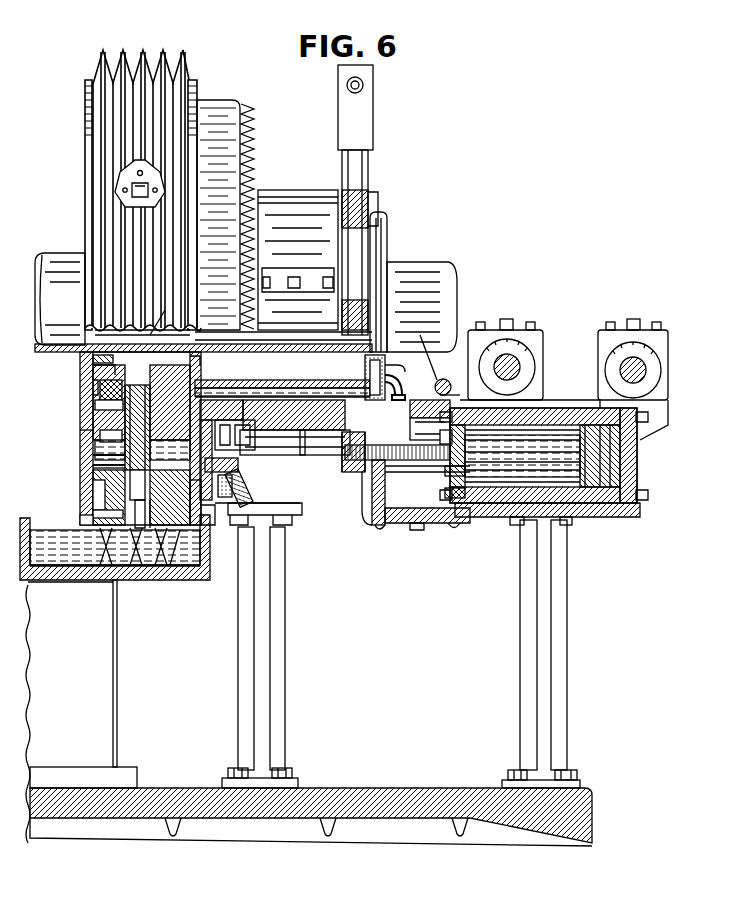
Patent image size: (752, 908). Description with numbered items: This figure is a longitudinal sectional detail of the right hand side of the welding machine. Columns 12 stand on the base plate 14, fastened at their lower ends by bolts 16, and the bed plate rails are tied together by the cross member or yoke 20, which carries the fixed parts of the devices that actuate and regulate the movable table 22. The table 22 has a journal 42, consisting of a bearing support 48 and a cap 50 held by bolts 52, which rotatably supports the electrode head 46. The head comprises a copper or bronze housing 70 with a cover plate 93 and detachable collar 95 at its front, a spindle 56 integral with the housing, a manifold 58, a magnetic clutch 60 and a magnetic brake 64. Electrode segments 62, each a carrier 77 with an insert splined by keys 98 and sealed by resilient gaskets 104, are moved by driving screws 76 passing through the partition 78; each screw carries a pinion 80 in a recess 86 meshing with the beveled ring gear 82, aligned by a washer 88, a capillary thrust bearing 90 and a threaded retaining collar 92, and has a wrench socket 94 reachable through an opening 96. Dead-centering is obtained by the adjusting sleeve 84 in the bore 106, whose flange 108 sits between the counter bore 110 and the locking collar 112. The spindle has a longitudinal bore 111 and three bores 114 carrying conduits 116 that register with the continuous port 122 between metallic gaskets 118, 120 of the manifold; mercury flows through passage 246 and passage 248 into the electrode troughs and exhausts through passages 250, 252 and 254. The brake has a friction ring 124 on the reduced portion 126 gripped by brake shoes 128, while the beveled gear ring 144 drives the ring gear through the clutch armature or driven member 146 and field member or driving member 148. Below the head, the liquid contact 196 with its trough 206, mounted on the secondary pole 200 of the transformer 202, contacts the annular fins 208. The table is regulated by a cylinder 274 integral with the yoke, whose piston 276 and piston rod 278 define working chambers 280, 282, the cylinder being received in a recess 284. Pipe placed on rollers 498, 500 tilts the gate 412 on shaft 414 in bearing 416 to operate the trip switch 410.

The columns 12 is at (286, 654).
The base plate 14 is at (378, 788).
The bolts 16 is at (293, 775).
The cross member or yoke 20 is at (618, 510).
The movable table 22 is at (378, 535).
The journal 42 is at (298, 267).
The electrode head 46 is at (190, 72).
The bearing support 48 is at (278, 455).
The cap 50 is at (290, 190).
The bolts 52 is at (292, 276).
The spindle 56 is at (303, 456).
The manifold 58 is at (389, 240).
The magnetic clutch 60 is at (240, 462).
The electrode segments 62 is at (214, 384).
The magnetic brake 64 is at (373, 136).
The housing 70 is at (86, 500).
The driving screw 76 is at (100, 392).
The carrier 77 is at (96, 408).
The partition 78 is at (102, 472).
The pinion 80 is at (190, 530).
The beveled ring gear 82 is at (190, 520).
The adjusting sleeve 84 is at (205, 395).
The recesses 86 is at (94, 488).
The washer 88 is at (93, 461).
The capillary thrust bearing 90 is at (100, 568).
The threaded retaining collar 92 is at (138, 568).
The cover plate 93 is at (94, 512).
The wrench sockets 94 is at (128, 192).
The detachable collar 95 is at (80, 320).
The opening 96 is at (136, 172).
The keys 98 is at (186, 358).
The resilient gaskets 104 is at (185, 332).
The bore 106 is at (60, 398).
The flange 108 is at (94, 445).
The counter bore 110 is at (78, 430).
The longitudinal bore 111 is at (402, 360).
The locking collar 112 is at (235, 435).
The bores 114 is at (282, 398).
The conduits 116 is at (325, 456).
The metallic gasket 118 is at (364, 368).
The metallic gasket 120 is at (369, 382).
The continuous port 122 is at (403, 378).
The friction ring 124 is at (380, 421).
The reduced portion 126 is at (427, 410).
The brake shoes 128 is at (380, 436).
The beveled gear ring 144 is at (245, 128).
The armature or driven member 146 is at (226, 460).
The field member or driving member 148 is at (246, 490).
The liquid contact 196 is at (62, 580).
The secondary pole or terminal 200 is at (75, 582).
The transformer 202 is at (108, 691).
The trough 206 is at (202, 566).
The annular fins 208 is at (128, 568).
The passage 246 is at (92, 360).
The passage 248 is at (166, 312).
The passages 250 is at (92, 372).
The passage 252 is at (92, 468).
The passages 254 is at (82, 520).
The cylinder 274 is at (586, 519).
The piston 276 is at (592, 424).
The piston rod 278 is at (444, 480).
The working chamber 280 is at (638, 443).
The working chamber 282 is at (516, 526).
The recess 284 is at (400, 524).
The trip switch 410 is at (448, 378).
The gate 412 is at (440, 383).
The shaft 414 is at (455, 395).
The bearing 416 is at (441, 440).
The roller 498 is at (522, 368).
The roller 500 is at (650, 372).